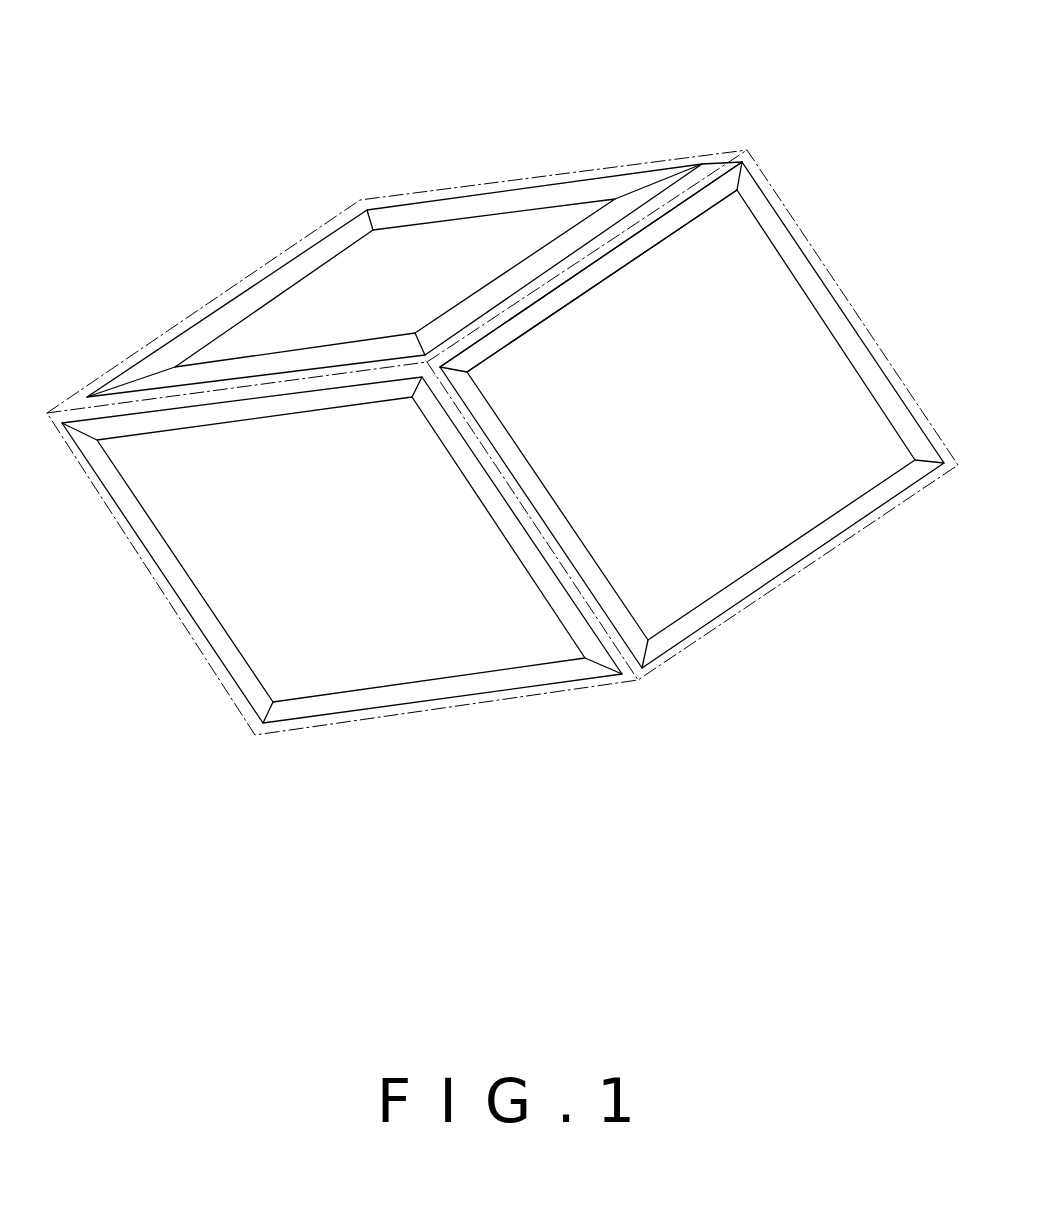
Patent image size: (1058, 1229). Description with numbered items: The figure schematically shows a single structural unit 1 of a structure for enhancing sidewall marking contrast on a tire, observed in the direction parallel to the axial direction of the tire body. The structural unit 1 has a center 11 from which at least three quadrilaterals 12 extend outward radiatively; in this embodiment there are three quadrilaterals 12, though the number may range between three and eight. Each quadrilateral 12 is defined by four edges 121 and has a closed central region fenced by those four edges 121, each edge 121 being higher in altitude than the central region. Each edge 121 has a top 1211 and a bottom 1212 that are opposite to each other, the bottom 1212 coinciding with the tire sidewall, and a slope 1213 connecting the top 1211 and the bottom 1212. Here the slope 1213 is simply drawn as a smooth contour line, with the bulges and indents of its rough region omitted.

The structural unit 1 is at (289, 83).
The center 11 is at (427, 360).
The quadrilateral 12 is at (339, 286).
The edge 121 is at (838, 83).
The top 1211 is at (687, 176).
The bottom 1212 is at (713, 210).
The slope 1213 is at (747, 167).